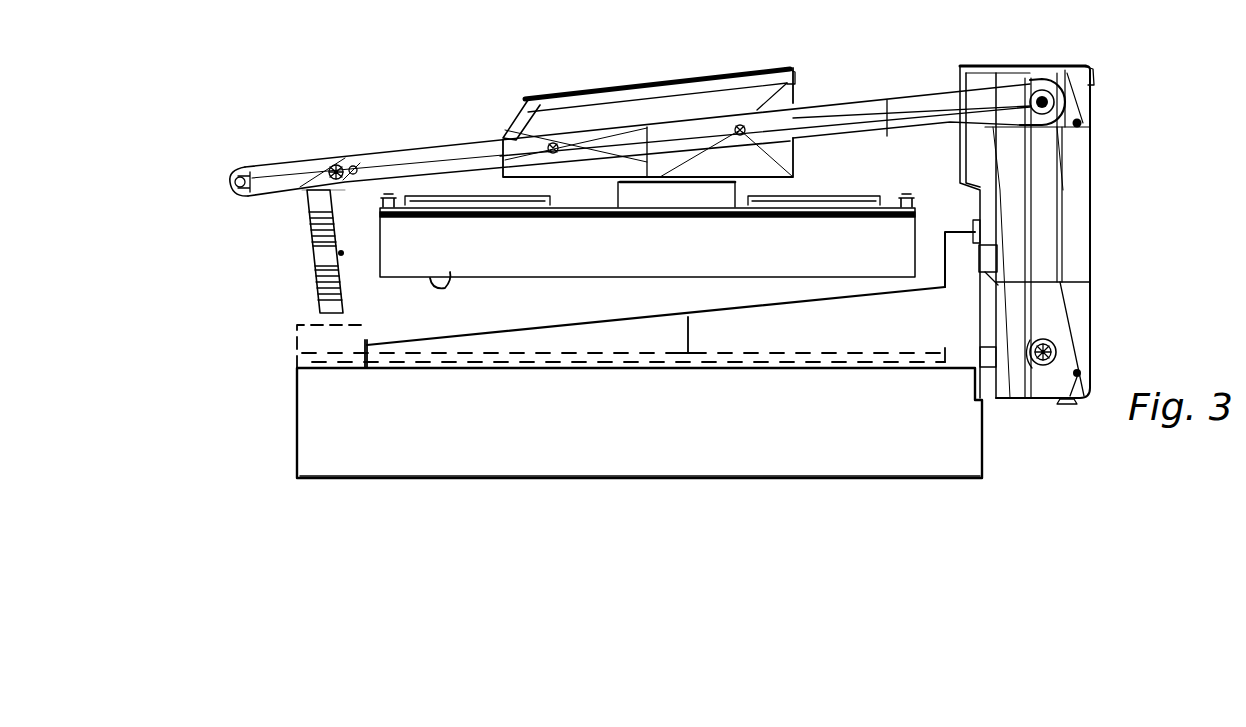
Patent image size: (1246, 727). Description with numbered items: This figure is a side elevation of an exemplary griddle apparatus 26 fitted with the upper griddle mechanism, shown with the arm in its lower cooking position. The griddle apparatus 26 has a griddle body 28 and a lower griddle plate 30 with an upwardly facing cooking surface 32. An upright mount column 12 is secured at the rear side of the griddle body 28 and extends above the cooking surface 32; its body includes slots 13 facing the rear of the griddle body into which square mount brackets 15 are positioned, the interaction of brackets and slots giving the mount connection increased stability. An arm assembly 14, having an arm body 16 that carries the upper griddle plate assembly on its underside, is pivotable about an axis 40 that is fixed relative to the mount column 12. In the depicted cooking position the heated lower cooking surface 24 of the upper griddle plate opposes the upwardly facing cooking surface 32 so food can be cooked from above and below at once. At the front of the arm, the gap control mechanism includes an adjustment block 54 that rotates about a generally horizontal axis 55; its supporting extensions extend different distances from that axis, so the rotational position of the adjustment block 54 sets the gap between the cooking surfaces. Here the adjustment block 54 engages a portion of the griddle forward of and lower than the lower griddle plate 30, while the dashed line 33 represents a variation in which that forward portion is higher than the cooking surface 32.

The mount column 12 is at (1075, 165).
The slots 13 is at (1007, 262).
The arm assembly 14 is at (900, 85).
The square mount brackets 15 is at (992, 262).
The arm body 16 is at (428, 152).
The lower cooking surface 24 is at (352, 252).
The griddle apparatus 26 is at (310, 408).
The griddle body 28 is at (840, 450).
The griddle plate 30 is at (552, 351).
The upwardly facing cooking surface 32 is at (679, 307).
The dashed line 33 is at (303, 316).
The axis 40 is at (1044, 97).
The adjustment block 54 is at (313, 243).
The axis 55 is at (222, 265).